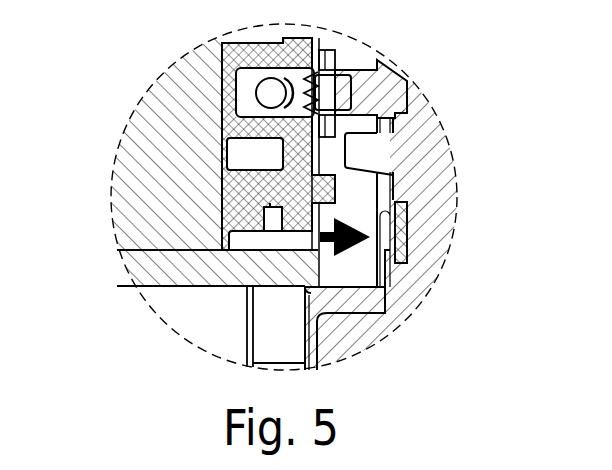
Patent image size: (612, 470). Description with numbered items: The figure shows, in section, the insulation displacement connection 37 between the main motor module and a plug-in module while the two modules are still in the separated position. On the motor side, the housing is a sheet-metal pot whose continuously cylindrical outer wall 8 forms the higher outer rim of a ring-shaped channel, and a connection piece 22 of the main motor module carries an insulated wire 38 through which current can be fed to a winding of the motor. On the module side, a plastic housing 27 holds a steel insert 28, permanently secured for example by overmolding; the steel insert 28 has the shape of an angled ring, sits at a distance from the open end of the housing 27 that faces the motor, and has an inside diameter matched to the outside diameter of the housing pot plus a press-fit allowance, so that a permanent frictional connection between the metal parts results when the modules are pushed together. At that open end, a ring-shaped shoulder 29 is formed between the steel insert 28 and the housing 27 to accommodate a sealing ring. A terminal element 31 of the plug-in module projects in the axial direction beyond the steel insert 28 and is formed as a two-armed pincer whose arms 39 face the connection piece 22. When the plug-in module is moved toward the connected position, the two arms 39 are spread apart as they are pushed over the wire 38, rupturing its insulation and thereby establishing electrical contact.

The outer wall 8 is at (177, 287).
The connection piece 22 is at (233, 57).
The housing 27 is at (427, 283).
The steel insert 28 is at (305, 345).
The shoulder 29 is at (269, 326).
The terminal element 31 is at (399, 96).
The insulation displacement connection 37 is at (169, 93).
The insulated wire 38 is at (265, 96).
The arms 39 is at (360, 53).